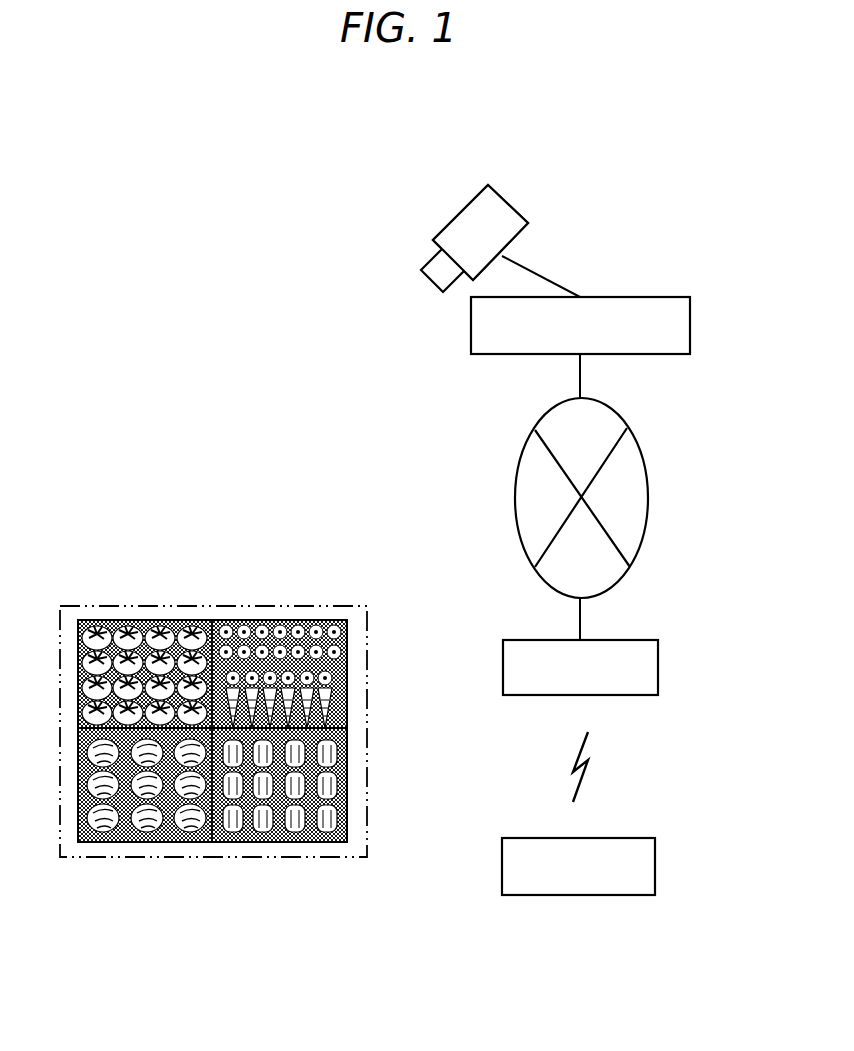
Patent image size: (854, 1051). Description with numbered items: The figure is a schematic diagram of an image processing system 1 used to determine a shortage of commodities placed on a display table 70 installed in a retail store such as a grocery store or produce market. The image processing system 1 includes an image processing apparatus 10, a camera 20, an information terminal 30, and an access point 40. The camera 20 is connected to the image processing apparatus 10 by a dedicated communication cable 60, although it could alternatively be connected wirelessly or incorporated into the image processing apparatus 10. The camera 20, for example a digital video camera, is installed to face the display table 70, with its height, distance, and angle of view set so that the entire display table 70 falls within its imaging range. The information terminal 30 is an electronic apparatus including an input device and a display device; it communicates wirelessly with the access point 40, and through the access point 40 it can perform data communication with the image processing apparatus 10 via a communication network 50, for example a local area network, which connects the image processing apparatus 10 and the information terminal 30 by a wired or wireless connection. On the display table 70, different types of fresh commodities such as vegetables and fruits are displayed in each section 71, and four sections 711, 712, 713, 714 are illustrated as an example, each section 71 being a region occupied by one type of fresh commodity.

The image processing system 1 is at (156, 127).
The image processing apparatus 10 is at (692, 311).
The camera 20 is at (491, 190).
The information terminal 30 is at (656, 855).
The access point 40 is at (660, 658).
The communication network 50 is at (525, 447).
The dedicated communication cable 60 is at (543, 267).
The display table 70 is at (367, 655).
The section 71 is at (212, 735).
The section 711 is at (100, 609).
The section 712 is at (235, 620).
The section 713 is at (232, 843).
The section 714 is at (102, 843).